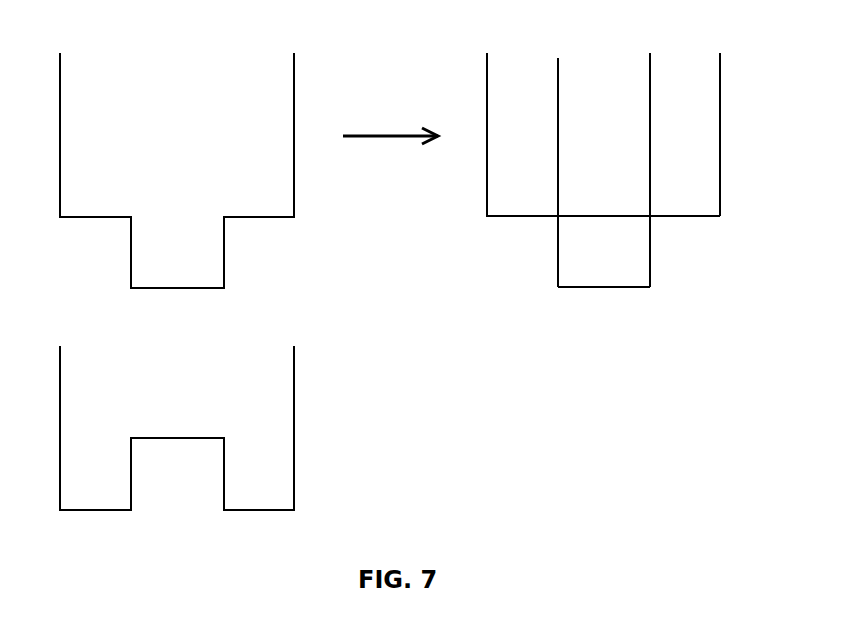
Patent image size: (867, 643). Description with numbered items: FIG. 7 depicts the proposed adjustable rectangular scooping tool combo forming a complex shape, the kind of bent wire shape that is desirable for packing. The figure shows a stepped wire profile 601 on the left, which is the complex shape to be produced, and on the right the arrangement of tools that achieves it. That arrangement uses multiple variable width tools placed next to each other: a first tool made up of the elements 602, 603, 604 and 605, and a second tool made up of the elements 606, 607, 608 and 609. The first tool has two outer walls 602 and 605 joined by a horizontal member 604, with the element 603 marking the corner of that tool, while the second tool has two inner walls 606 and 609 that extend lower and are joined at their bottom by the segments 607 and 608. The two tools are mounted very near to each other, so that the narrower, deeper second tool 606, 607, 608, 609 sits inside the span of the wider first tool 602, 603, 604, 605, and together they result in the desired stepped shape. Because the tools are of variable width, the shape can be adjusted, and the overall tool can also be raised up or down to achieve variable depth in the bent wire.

The patterned structure with recess 601 is at (72, 136).
The tool 602 is at (488, 116).
The tool 603 is at (479, 223).
The tool 604 is at (614, 234).
The tool 605 is at (727, 123).
The tool 606 is at (562, 159).
The tool 607 is at (572, 307).
The tool 608 is at (641, 307).
The tool 609 is at (659, 151).